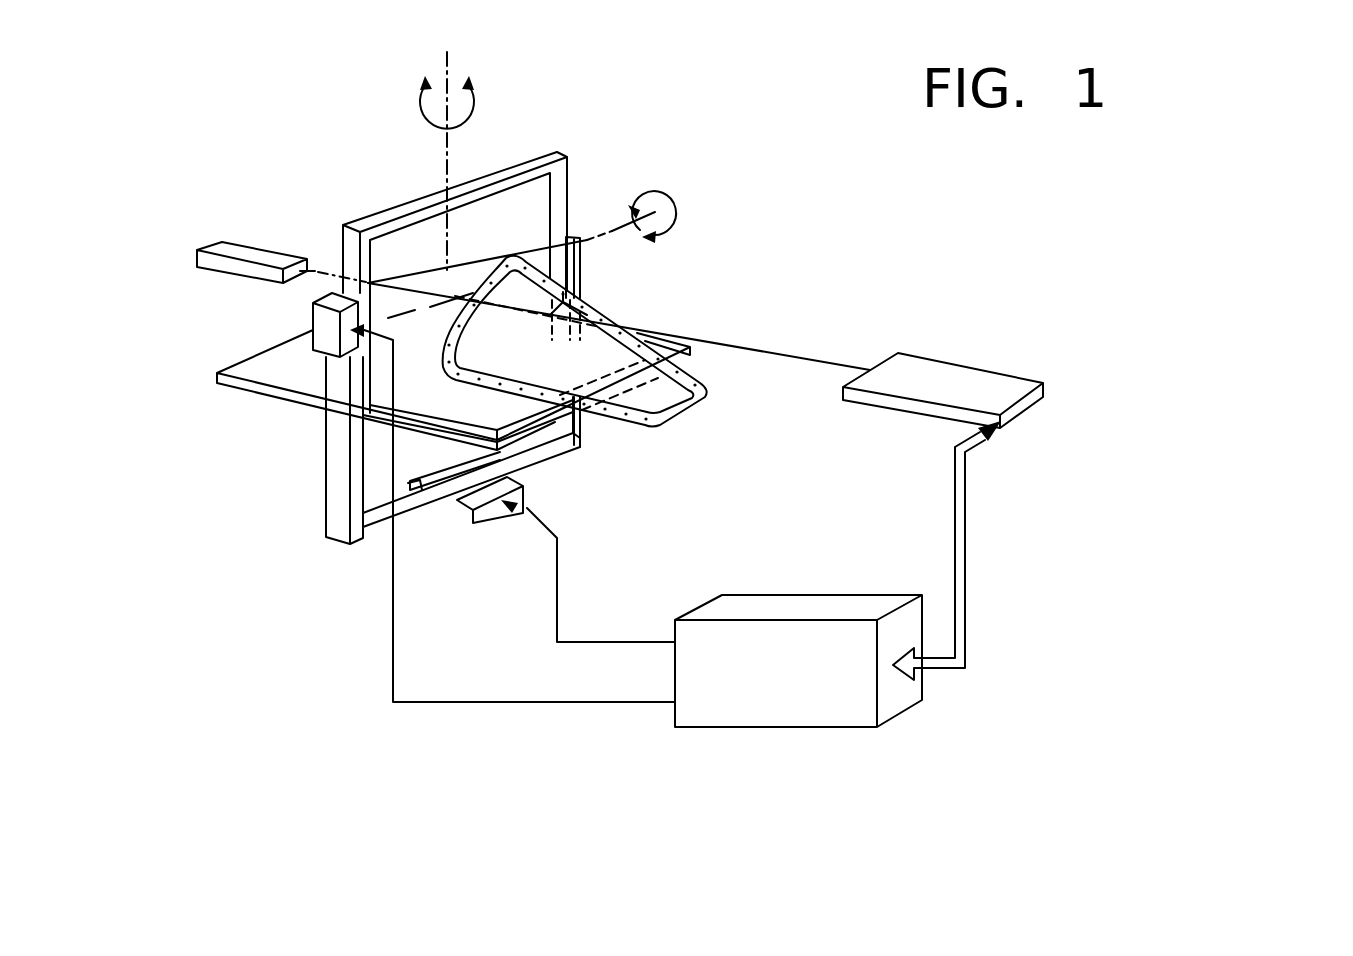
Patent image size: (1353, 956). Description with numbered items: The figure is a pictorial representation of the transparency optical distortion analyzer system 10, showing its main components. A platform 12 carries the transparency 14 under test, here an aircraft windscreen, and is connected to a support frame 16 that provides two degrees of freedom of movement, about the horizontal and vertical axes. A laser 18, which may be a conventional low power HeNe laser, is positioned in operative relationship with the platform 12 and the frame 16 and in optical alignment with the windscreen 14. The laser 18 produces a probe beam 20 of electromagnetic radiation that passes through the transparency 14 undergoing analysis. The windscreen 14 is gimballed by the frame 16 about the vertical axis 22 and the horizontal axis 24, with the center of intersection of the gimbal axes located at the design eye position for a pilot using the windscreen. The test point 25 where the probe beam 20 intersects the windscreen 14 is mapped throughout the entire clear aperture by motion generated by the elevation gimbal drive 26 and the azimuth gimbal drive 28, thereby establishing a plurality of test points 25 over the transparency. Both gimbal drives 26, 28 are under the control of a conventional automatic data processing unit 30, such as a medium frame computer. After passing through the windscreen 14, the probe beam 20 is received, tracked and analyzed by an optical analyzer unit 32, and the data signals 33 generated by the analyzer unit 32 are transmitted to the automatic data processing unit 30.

The transparency optical distortion analyzer system 10 is at (848, 255).
The platform 12 is at (218, 388).
The transparency 14 is at (693, 397).
The support frame 16 is at (325, 507).
The laser 18 is at (256, 235).
The probe beam 20 is at (322, 272).
The vertical axis 22 is at (447, 163).
The horizontal axis 24 is at (619, 237).
The test point 25 is at (587, 300).
The elevation gimbal drive 26 is at (313, 328).
The azimuth gimbal drive 28 is at (465, 523).
The automatic data processing unit 30 is at (853, 746).
The optical analyzer unit 32 is at (1002, 358).
The data signals 33 is at (967, 547).